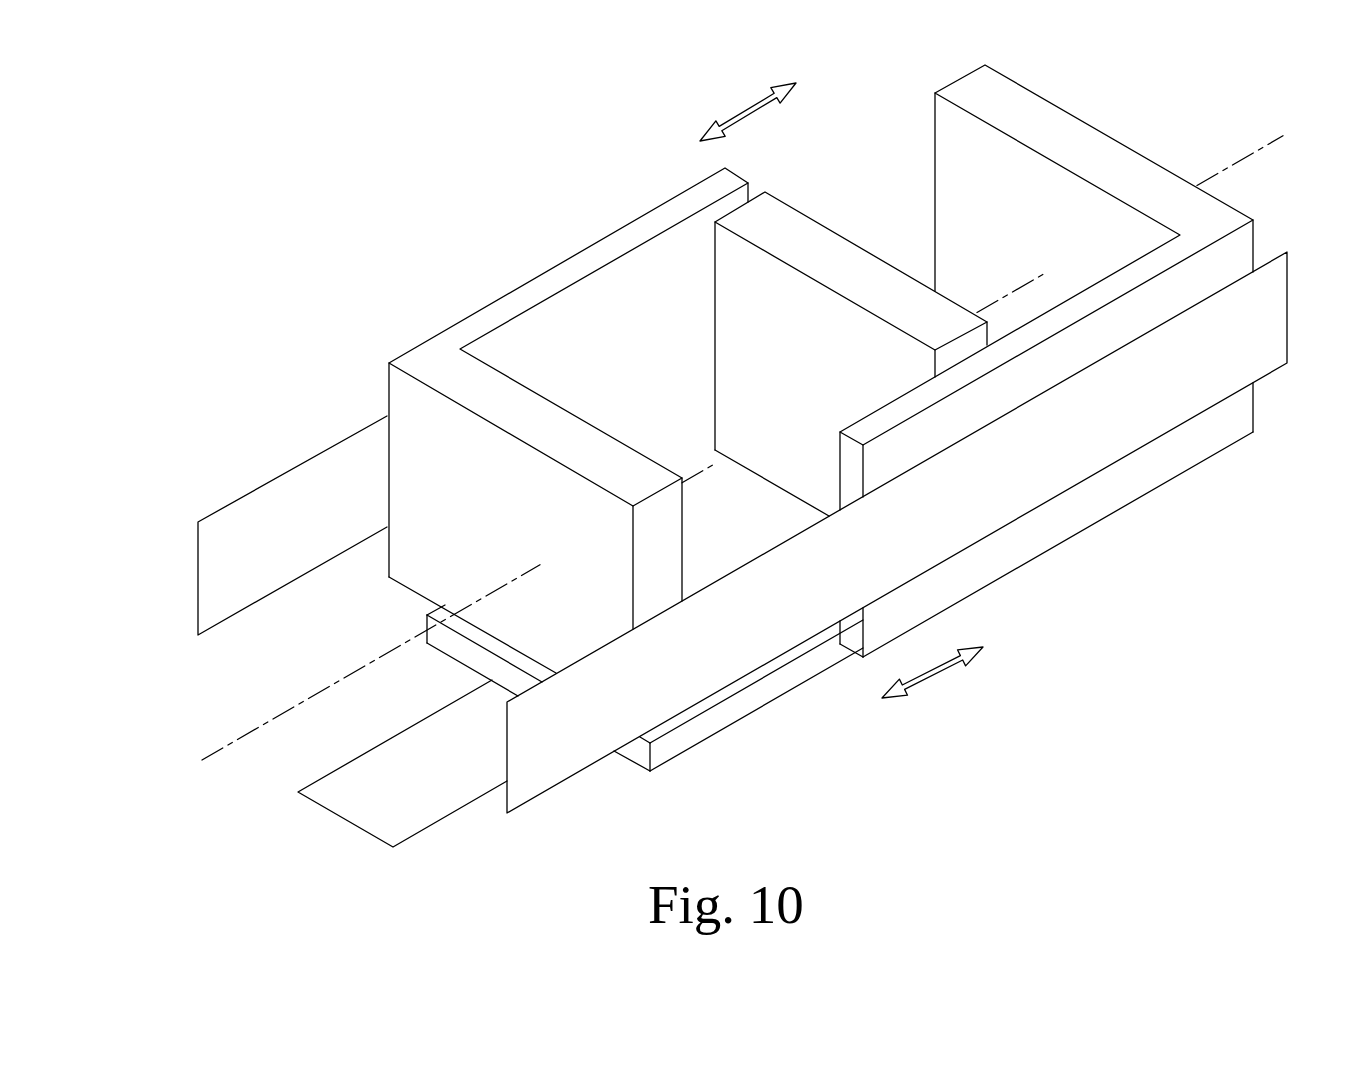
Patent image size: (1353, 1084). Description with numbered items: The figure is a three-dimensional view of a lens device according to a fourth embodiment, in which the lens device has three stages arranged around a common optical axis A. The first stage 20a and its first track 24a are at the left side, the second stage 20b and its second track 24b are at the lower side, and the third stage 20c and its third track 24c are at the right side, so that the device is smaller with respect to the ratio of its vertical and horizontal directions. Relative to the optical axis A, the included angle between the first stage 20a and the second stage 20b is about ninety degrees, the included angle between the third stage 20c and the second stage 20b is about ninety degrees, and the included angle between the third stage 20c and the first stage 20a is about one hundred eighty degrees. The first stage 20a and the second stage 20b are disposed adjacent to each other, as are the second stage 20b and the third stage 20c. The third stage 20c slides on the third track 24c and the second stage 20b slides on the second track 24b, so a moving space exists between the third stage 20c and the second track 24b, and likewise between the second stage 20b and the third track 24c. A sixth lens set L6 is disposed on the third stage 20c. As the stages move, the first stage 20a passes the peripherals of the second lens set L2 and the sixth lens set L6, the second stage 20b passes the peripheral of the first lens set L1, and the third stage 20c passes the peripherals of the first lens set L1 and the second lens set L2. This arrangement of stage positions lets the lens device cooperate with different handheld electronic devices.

The first stage 20a is at (583, 477).
The second stage 20b is at (797, 677).
The third stage 20c is at (1052, 361).
The first track 24a is at (208, 579).
The second track 24b is at (348, 782).
The third track 24c is at (563, 760).
The optical axis A is at (730, 459).
The first lens set L1 is at (657, 598).
The second lens set L2 is at (817, 236).
The sixth lens set L6 is at (1102, 147).